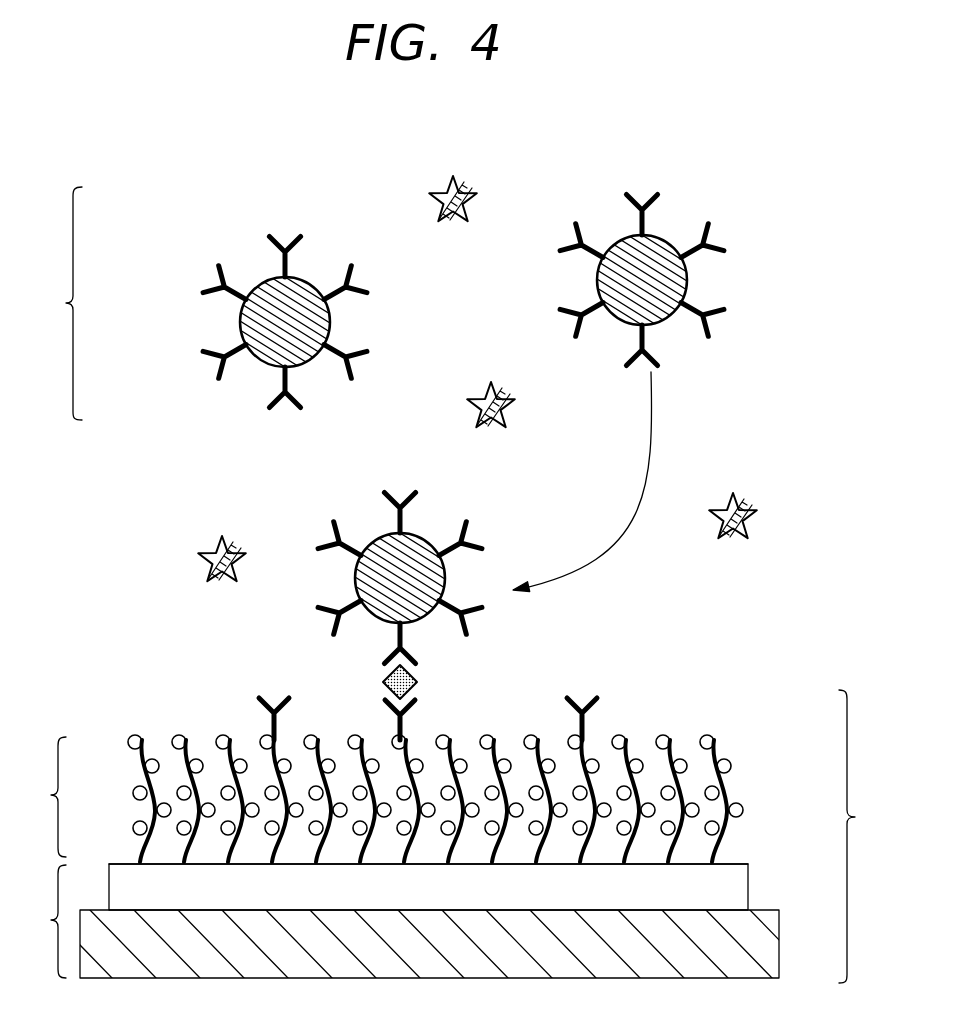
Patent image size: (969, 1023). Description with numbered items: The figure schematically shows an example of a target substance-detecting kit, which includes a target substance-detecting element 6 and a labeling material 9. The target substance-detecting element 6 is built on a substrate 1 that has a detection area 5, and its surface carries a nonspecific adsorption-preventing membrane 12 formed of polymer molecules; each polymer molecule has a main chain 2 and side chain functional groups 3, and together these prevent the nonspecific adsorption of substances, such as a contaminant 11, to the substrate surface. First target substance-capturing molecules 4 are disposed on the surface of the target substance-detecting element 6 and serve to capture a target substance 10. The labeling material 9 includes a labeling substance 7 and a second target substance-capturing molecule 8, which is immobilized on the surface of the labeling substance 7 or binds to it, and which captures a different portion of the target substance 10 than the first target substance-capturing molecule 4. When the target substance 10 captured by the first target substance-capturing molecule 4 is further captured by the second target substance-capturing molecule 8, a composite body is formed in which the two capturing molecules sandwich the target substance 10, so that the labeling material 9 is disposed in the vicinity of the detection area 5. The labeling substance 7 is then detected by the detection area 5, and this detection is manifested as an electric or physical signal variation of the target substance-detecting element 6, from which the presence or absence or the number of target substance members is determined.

The substrate 1 is at (423, 921).
The main chain 2 is at (137, 856).
The side chain functional group 3 is at (134, 740).
The first target substance-capturing molecule 4 is at (262, 699).
The detection area 5 is at (736, 886).
The target substance-detecting element 6 is at (858, 836).
The labeling substance 7 is at (306, 279).
The second target substance-capturing molecule 8 is at (218, 370).
The labeling material 9 is at (65, 303).
The target substance 10 is at (419, 681).
The contaminant 11 is at (210, 546).
The nonspecific adsorption-preventing membrane 12 is at (41, 797).